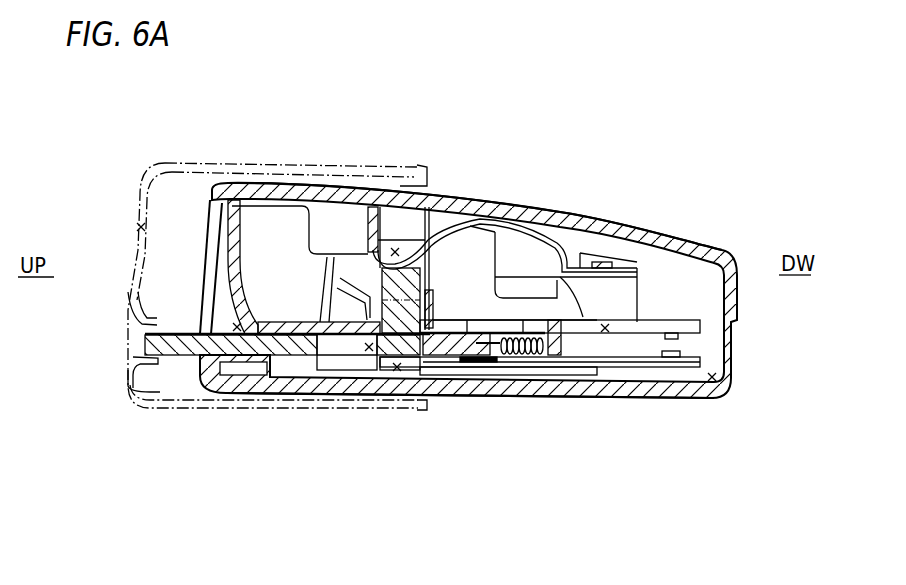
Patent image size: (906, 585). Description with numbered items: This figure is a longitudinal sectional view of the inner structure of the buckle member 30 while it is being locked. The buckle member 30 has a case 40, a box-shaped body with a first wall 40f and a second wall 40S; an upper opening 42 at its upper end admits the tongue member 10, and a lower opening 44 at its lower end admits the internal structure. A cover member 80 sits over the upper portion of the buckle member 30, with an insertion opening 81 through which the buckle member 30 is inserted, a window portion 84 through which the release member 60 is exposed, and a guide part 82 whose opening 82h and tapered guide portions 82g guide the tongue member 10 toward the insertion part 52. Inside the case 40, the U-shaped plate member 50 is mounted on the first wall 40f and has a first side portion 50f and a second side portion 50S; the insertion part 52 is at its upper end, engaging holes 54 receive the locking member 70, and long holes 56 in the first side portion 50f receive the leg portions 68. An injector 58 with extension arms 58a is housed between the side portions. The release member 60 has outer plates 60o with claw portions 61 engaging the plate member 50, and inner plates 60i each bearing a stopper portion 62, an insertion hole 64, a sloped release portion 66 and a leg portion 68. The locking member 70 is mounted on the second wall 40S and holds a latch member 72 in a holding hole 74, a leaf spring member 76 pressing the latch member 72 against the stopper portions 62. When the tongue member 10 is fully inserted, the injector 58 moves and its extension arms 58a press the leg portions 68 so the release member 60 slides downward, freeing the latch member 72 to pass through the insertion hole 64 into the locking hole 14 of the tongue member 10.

The tongue member 10 is at (279, 375).
The locking hole 14 is at (369, 347).
The buckle member 30 is at (489, 299).
The case 40 is at (489, 310).
The second wall 40S is at (546, 212).
The first wall 40f is at (451, 386).
The upper opening 42 is at (206, 271).
The lower opening 44 is at (713, 393).
The plate member 50 is at (590, 396).
The first side portion 50f is at (700, 328).
The second side portion 50S is at (700, 361).
The insertion part 52 is at (235, 327).
The engaging hole 54 is at (398, 368).
The long hole 56 is at (606, 328).
The injector 58 is at (517, 416).
The extension arm 58a is at (510, 362).
The release member 60 is at (362, 346).
The inner plate 60i is at (488, 268).
The outer plate 60o is at (330, 358).
The claw portion 61 is at (315, 410).
The stopper portion 62 is at (452, 283).
The insertion hole 64 is at (440, 318).
The release portion 66 is at (326, 276).
The leg portion 68 is at (555, 365).
The locking member 70 is at (369, 204).
The latch member 72 is at (372, 212).
The holding hole 74 is at (395, 250).
The leaf spring member 76 is at (428, 210).
The cover member 80 is at (285, 255).
The insertion opening 81 is at (441, 192).
The guide part 82 is at (87, 373).
The guide portion 82g is at (140, 335).
The opening 82h is at (133, 348).
The window portion 84 is at (137, 227).